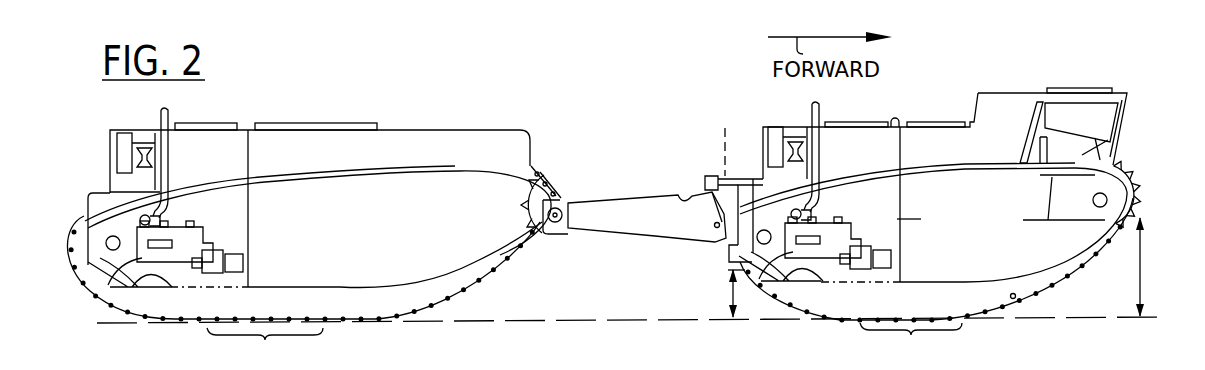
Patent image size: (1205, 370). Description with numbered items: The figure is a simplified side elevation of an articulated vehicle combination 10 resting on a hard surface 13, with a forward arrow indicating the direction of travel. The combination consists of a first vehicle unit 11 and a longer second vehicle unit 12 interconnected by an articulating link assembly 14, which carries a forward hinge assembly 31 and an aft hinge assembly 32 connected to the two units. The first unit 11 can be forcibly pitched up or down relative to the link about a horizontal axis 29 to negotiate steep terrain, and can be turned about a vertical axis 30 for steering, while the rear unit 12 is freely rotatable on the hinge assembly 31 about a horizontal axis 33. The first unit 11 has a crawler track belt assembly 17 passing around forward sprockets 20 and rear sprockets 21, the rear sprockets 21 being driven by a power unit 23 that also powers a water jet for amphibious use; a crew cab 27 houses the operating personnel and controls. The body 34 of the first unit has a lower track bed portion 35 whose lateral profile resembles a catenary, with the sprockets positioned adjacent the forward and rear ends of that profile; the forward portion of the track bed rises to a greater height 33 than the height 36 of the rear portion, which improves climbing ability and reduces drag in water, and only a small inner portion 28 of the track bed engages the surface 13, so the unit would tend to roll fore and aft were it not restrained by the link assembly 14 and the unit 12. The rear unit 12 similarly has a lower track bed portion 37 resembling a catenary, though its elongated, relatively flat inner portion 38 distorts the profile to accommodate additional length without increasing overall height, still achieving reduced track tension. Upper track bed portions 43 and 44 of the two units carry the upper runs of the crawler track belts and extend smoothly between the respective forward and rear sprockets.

The articulated vehicle combination 10 is at (718, 99).
The first vehicle unit 11 is at (949, 86).
The second vehicle unit 12 is at (355, 95).
The hard surface 13 is at (478, 320).
The articulating link assembly 14 is at (615, 202).
The first crawler track belt assembly 17 is at (1073, 284).
The forward sprockets 20 is at (1131, 174).
The rear sprockets 21 is at (758, 224).
The power unit 23 is at (833, 235).
The crew cab 27 is at (1062, 108).
The inner portion 28 is at (911, 340).
The horizontal axis 29 is at (712, 225).
The vertical axis 30 is at (722, 143).
The forward hinge assembly 31 is at (558, 195).
The aft hinge assembly 32 is at (716, 243).
The horizontal axis / height of forward track bed portion 33 is at (558, 223).
The body 34 is at (909, 219).
The lower track bed portion 35 is at (1014, 297).
The height of rear track bed portion 36 is at (736, 284).
The lower track bed portion 37 is at (486, 279).
The elongated inner portion 38 is at (265, 343).
The upper track bed portion 43 is at (927, 168).
The upper track bed portion 44 is at (332, 170).